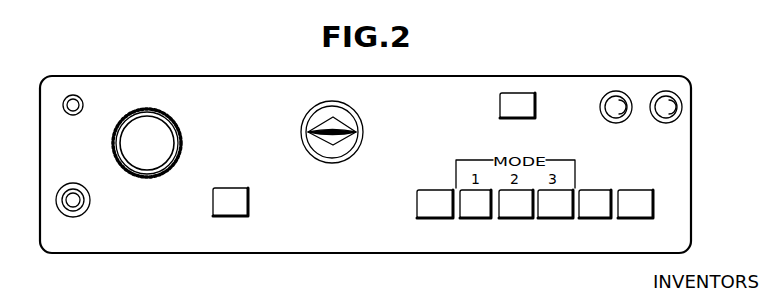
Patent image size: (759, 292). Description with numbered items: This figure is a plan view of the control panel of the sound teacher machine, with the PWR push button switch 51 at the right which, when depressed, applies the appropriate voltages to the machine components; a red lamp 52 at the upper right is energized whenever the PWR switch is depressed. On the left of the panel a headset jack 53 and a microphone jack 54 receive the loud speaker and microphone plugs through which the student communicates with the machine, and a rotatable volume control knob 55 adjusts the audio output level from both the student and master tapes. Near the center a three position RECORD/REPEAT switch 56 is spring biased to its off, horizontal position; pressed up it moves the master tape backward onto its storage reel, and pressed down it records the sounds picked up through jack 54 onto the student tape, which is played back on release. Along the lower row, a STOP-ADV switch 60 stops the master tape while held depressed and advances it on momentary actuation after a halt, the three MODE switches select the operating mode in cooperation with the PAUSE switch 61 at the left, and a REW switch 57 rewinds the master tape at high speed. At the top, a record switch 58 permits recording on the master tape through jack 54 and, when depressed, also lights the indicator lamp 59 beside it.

The power switch button 51 is at (656, 203).
The red lamp 52 is at (681, 100).
The headset jack 53 is at (79, 97).
The microphone jack 54 is at (72, 217).
The volume control knob 55 is at (157, 109).
The RECORD/REPEAT switch 56 is at (358, 128).
The REW switch 57 is at (600, 219).
The record switch 58 is at (532, 95).
The indicator lamp 59 is at (625, 100).
The STOP-ADV switch 60 is at (430, 218).
The PAUSE switch 61 is at (233, 217).